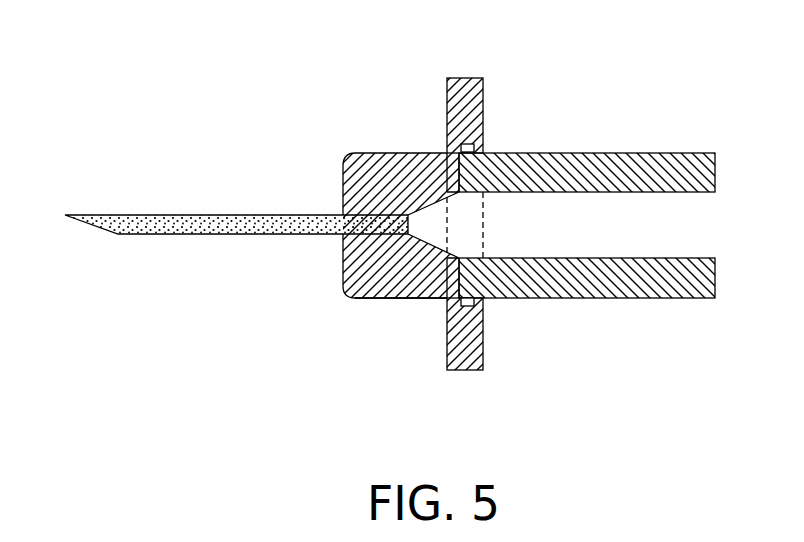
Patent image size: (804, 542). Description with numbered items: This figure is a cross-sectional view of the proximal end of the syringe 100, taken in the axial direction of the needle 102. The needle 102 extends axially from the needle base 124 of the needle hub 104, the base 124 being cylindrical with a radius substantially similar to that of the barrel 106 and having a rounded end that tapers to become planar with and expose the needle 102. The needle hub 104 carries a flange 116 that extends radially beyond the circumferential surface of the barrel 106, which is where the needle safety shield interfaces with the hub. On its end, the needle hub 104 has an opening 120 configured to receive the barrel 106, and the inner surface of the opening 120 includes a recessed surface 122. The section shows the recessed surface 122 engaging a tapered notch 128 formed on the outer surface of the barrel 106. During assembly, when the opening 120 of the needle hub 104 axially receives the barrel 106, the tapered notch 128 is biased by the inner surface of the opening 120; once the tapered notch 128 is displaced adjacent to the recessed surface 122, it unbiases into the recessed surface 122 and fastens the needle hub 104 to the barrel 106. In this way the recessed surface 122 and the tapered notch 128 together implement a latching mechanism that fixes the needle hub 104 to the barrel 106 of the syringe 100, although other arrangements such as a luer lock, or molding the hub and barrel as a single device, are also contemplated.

The syringe 100 is at (136, 70).
The needle 102 is at (95, 227).
The needle hub 104 is at (345, 177).
The barrel 106 is at (683, 298).
The flange 116 is at (447, 100).
The opening 120 is at (483, 224).
The recessed surface 122 is at (470, 147).
The needle base 124 is at (378, 298).
The tapered notch 128 is at (466, 301).